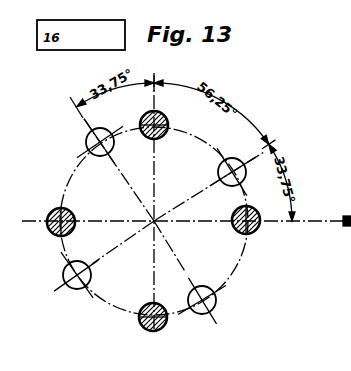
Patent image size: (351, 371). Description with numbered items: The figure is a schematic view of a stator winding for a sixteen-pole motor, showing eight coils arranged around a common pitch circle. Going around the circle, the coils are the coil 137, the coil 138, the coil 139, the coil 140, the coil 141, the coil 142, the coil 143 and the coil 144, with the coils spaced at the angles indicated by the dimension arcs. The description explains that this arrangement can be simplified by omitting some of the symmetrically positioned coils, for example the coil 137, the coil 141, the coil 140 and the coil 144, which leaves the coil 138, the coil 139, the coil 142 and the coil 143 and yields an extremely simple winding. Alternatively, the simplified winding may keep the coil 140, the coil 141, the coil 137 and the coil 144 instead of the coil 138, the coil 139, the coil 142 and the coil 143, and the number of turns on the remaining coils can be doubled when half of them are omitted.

The coil 137 is at (238, 232).
The coil 138 is at (218, 172).
The coil 139 is at (168, 124).
The coil 140 is at (86, 142).
The coil 141 is at (75, 218).
The coil 142 is at (91, 272).
The coil 143 is at (139, 322).
The coil 144 is at (214, 302).